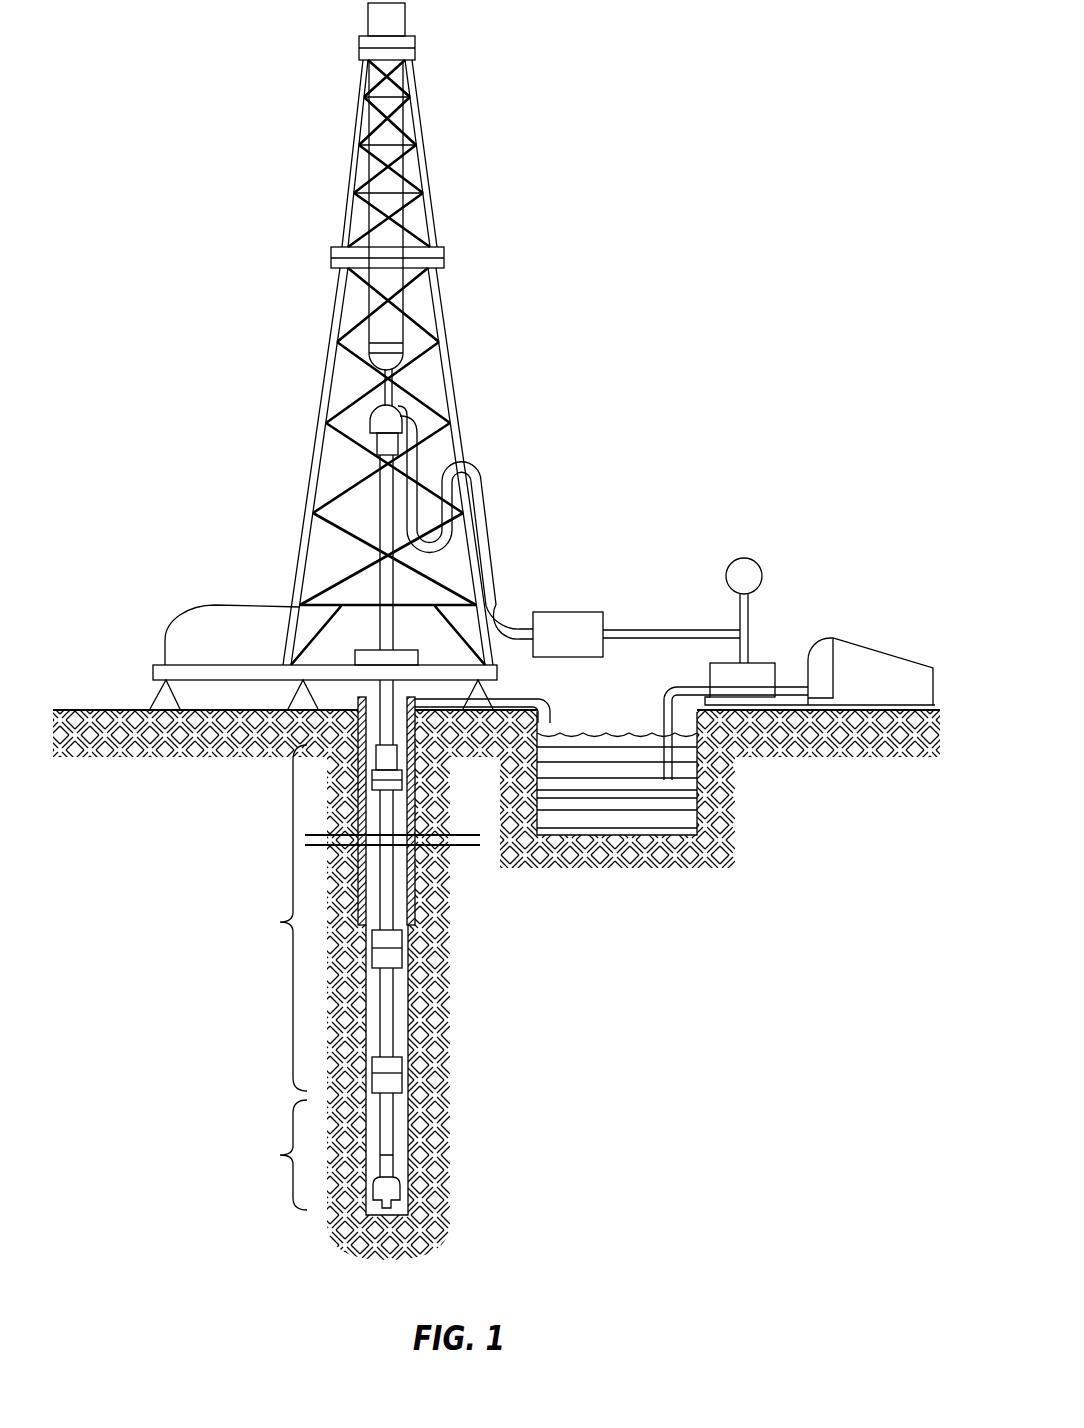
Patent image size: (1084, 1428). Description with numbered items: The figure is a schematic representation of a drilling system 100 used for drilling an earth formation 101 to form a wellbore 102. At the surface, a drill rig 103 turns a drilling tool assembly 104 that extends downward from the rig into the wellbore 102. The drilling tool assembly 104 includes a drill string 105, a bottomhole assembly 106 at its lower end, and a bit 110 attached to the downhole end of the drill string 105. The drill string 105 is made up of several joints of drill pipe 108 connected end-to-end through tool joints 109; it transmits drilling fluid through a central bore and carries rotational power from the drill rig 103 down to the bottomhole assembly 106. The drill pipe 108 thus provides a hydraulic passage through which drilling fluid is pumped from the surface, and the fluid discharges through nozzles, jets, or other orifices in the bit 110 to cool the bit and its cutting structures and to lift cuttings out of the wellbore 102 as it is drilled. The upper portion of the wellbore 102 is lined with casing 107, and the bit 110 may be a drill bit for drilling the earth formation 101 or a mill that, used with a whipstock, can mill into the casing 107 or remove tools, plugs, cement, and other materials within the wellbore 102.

The drilling system 100 is at (531, 54).
The earth formation 101 is at (482, 761).
The wellbore 102 is at (412, 1053).
The drill rig 103 is at (333, 312).
The drilling tool assembly 104 is at (428, 904).
The drill string 105 is at (273, 918).
The bottomhole assembly 106 is at (272, 1155).
The casing 107 is at (417, 868).
The drill pipe 108 is at (393, 1013).
The tool joint 109 is at (395, 958).
The bit 110 is at (397, 1193).